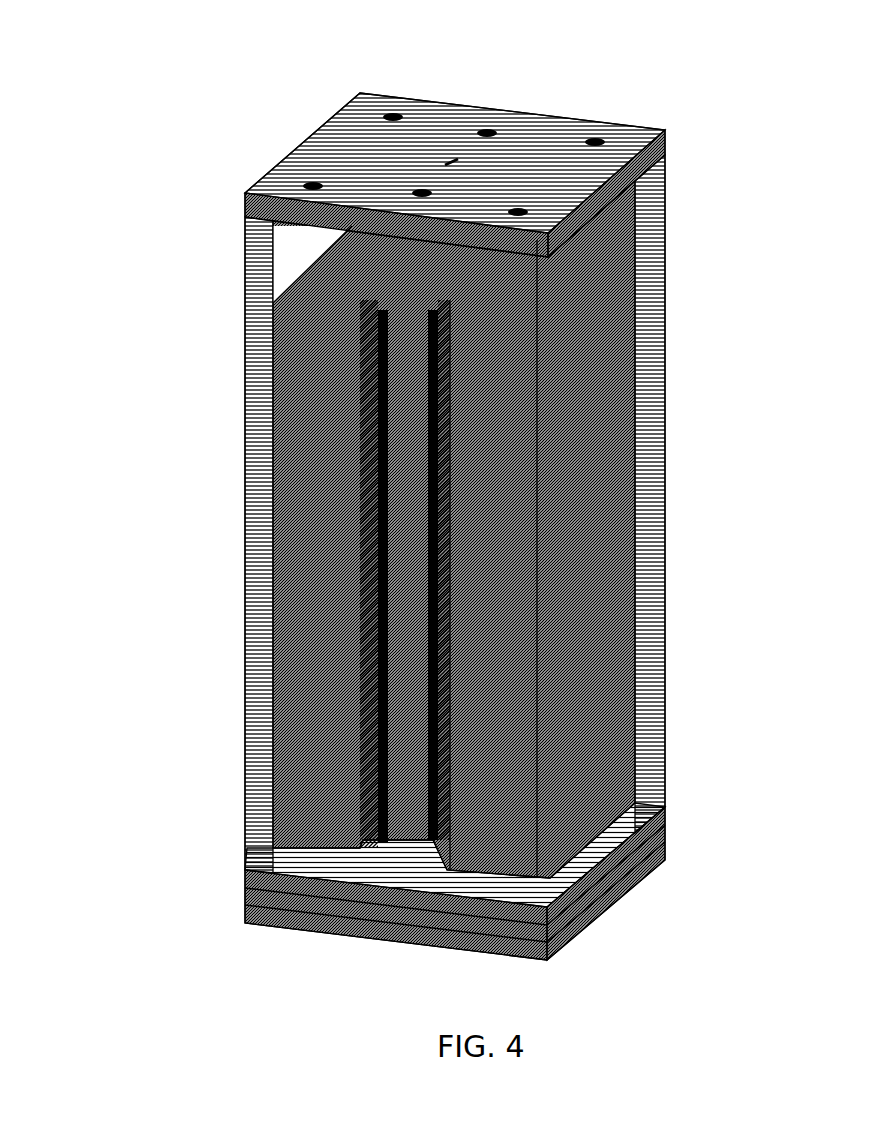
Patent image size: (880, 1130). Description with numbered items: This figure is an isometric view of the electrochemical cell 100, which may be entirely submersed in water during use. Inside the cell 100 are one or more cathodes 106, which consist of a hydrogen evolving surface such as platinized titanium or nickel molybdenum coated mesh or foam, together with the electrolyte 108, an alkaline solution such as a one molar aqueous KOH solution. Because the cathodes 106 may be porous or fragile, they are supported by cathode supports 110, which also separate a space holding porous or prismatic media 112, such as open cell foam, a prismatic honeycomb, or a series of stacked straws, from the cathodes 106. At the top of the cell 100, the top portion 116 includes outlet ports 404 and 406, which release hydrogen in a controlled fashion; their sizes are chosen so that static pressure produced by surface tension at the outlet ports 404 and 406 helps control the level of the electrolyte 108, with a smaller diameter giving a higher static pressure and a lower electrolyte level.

The electrochemical cell 100 is at (175, 643).
The cathodes 106 is at (427, 572).
The electrolyte 108 is at (283, 256).
The cathode supports 110 is at (445, 745).
The porous or prismatic media 112 is at (350, 838).
The top portion 116 is at (340, 148).
The outlet port 404 is at (450, 163).
The outlet ports 406 is at (487, 133).